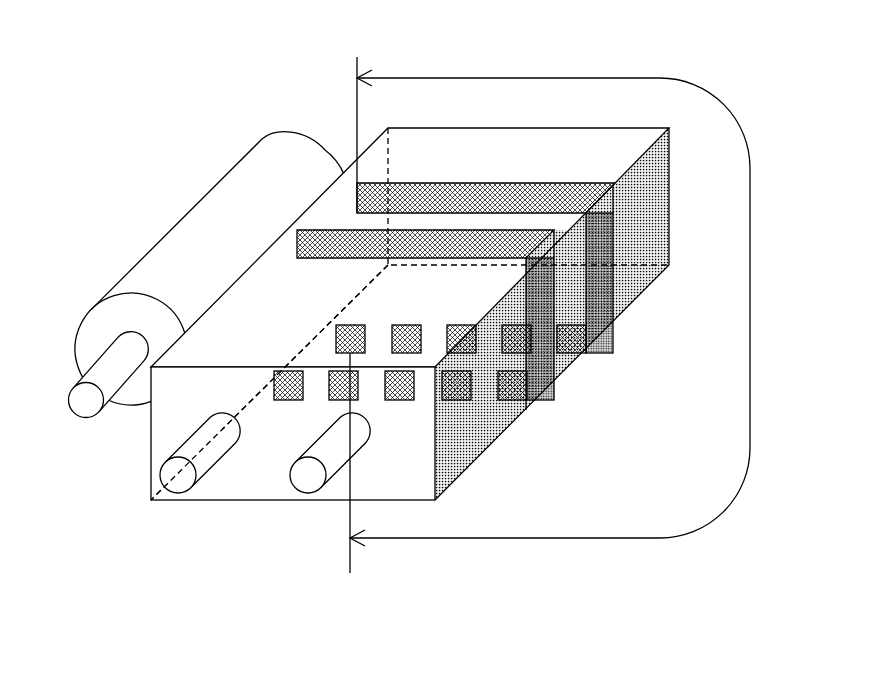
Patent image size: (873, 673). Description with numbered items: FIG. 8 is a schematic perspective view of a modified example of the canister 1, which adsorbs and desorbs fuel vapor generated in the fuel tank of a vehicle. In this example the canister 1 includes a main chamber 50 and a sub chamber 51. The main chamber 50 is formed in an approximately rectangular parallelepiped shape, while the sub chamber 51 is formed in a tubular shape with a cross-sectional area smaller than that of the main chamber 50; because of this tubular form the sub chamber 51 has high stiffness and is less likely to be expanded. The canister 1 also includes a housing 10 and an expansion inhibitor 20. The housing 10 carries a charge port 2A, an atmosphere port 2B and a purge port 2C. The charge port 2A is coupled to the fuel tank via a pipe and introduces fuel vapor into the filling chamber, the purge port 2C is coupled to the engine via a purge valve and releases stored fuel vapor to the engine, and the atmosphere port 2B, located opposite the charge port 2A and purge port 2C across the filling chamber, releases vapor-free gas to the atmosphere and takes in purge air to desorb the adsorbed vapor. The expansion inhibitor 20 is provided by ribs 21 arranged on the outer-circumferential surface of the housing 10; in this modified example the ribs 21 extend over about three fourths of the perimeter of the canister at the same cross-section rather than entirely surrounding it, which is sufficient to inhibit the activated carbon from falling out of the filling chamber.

The canister 1 is at (139, 147).
The housing 10 is at (587, 128).
The main chamber 50 is at (473, 128).
The sub chamber 51 is at (147, 273).
The charge port 2A is at (292, 487).
The atmosphere port 2B is at (83, 418).
The purge port 2C is at (168, 490).
The expansion inhibitor 20 is at (613, 332).
The ribs 21 is at (613, 292).